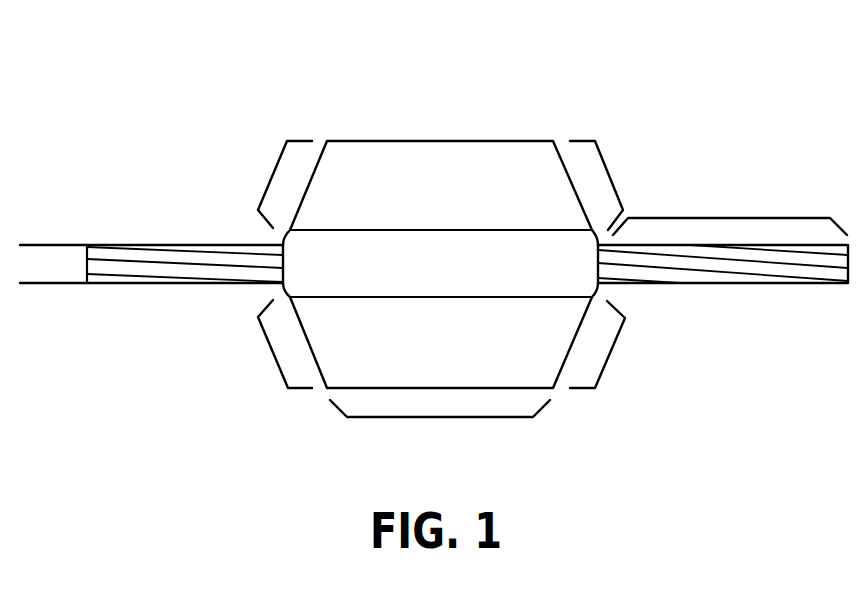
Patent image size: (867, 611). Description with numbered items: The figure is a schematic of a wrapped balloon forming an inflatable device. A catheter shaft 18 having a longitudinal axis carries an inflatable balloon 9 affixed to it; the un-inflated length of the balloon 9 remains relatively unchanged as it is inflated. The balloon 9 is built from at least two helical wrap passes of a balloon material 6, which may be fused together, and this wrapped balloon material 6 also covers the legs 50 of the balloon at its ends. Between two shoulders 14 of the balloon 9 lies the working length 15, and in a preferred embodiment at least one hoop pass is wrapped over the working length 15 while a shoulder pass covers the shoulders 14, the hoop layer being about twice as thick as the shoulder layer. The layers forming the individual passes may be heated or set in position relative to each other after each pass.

The inflatable balloon 9 is at (588, 101).
The catheter shaft 18 is at (60, 258).
The balloon material 6 is at (168, 244).
The legs 50 is at (750, 211).
The shoulders 14 is at (608, 173).
The working length 15 is at (447, 418).